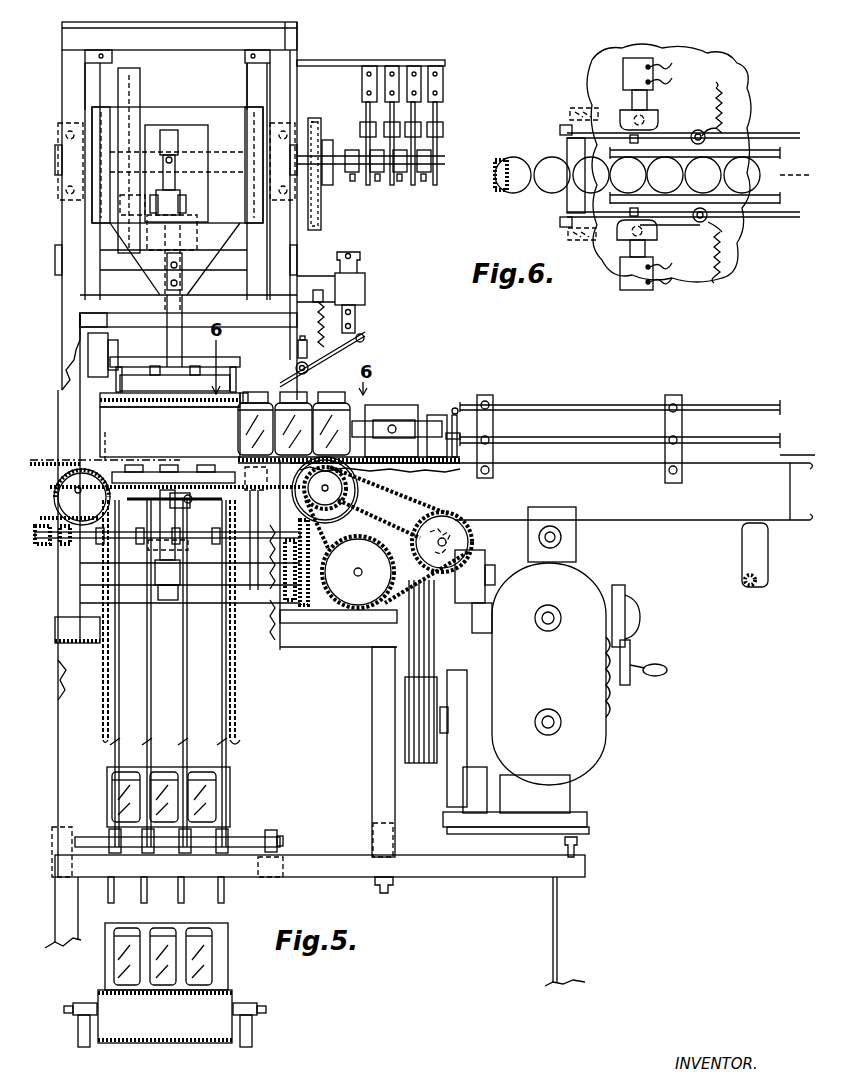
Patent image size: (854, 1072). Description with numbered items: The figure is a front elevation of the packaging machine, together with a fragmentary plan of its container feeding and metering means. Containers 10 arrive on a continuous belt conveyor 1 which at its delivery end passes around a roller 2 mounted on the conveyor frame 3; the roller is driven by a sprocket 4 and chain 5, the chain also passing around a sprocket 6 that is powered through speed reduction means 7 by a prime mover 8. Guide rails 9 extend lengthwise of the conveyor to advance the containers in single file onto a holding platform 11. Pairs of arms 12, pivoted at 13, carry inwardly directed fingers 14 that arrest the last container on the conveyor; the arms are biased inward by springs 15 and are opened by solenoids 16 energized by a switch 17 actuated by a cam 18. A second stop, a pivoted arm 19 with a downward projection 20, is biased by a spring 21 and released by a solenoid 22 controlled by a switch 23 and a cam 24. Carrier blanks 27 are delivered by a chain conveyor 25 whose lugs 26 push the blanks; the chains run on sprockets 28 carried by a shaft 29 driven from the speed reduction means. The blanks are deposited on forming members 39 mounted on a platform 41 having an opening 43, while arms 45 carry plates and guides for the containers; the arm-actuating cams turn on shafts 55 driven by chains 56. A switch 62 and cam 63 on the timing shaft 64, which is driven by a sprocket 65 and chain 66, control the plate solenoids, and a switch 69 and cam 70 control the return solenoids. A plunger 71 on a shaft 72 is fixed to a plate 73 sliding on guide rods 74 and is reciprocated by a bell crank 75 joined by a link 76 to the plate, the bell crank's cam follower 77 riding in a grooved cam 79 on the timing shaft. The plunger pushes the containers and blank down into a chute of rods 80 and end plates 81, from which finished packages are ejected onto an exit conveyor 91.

In FIG. 5, the belt conveyor 1 is at (800, 470).
In FIG. 6, the belt conveyor 1 is at (788, 200).
In FIG. 5, the roller 2 is at (355, 498).
In FIG. 5, the conveyor frame 3 is at (655, 522).
In FIG. 5, the sprocket 4 is at (340, 490).
In FIG. 5, the chain 5 is at (432, 512).
In FIG. 5, the sprocket 6 is at (465, 528).
In FIG. 5, the speed reduction means 7 is at (345, 623).
In FIG. 5, the prime mover 8 is at (447, 765).
In FIG. 5, the guide rails 9 is at (578, 405).
In FIG. 6, the guide rails 9 is at (727, 150).
In FIG. 5, the containers 10 is at (328, 397).
In FIG. 6, the containers 10 is at (512, 195).
In FIG. 5, the holding platform 11 is at (245, 460).
In FIG. 5, the arms 12 is at (432, 415).
In FIG. 6, the arms 12 is at (565, 115).
In FIG. 5, the pivot 13 is at (446, 412).
In FIG. 6, the pivot 13 is at (698, 131).
In FIG. 6, the fingers 14 is at (568, 134).
In FIG. 6, the springs 15 is at (722, 110).
In FIG. 5, the solenoids 16 is at (385, 405).
In FIG. 6, the solenoids 16 is at (625, 70).
In FIG. 5, the switch 17 is at (362, 81).
In FIG. 5, the cam 18 is at (368, 185).
In FIG. 5, the pivoted arm 19 is at (318, 364).
In FIG. 5, the container engaging projection 20 is at (240, 410).
In FIG. 6, the container engaging projection 20 is at (500, 160).
In FIG. 5, the spring 21 is at (310, 324).
In FIG. 5, the solenoid 22 is at (365, 291).
In FIG. 5, the switch 23 is at (392, 68).
In FIG. 5, the cam 24 is at (392, 185).
In FIG. 5, the chain conveyor 25 is at (60, 478).
In FIG. 5, the lugs 26 is at (45, 458).
In FIG. 5, the blanks 27 is at (121, 443).
In FIG. 5, the sprockets 28 is at (58, 496).
In FIG. 5, the shaft 29 is at (82, 497).
In FIG. 5, the forming member 39 is at (190, 472).
In FIG. 5, the platform 41 is at (250, 495).
In FIG. 5, the opening 43 is at (212, 498).
In FIG. 5, the arms 45 is at (203, 360).
In FIG. 5, the shafts 55 is at (210, 570).
In FIG. 5, the chains 56 is at (290, 600).
In FIG. 5, the switch 62 is at (413, 66).
In FIG. 5, the cam 63 is at (413, 185).
In FIG. 5, the timing shaft 64 is at (305, 155).
In FIG. 5, the sprocket 65 is at (336, 185).
In FIG. 5, the chain 66 is at (318, 220).
In FIG. 5, the switch 69 is at (443, 80).
In FIG. 5, the cam 70 is at (437, 180).
In FIG. 5, the plunger 71 is at (165, 392).
In FIG. 5, the shaft 72 is at (167, 323).
In FIG. 5, the plate 73 is at (172, 107).
In FIG. 5, the guide rods 74 is at (100, 78).
In FIG. 5, the bell crank 75 is at (150, 236).
In FIG. 5, the link 76 is at (172, 170).
In FIG. 5, the cam follower 77 is at (110, 210).
In FIG. 5, the grooved cam 79 is at (145, 80).
In FIG. 5, the rods 80 is at (150, 672).
In FIG. 5, the end plates 81 is at (106, 684).
In FIG. 5, the exit conveyor 91 is at (148, 1043).